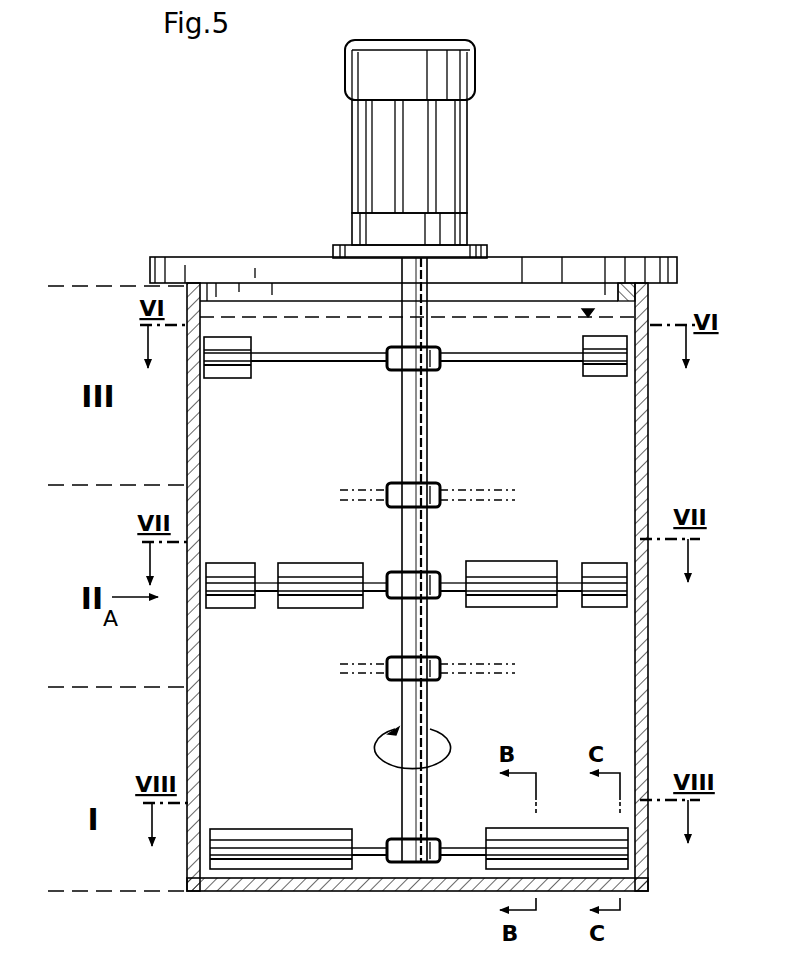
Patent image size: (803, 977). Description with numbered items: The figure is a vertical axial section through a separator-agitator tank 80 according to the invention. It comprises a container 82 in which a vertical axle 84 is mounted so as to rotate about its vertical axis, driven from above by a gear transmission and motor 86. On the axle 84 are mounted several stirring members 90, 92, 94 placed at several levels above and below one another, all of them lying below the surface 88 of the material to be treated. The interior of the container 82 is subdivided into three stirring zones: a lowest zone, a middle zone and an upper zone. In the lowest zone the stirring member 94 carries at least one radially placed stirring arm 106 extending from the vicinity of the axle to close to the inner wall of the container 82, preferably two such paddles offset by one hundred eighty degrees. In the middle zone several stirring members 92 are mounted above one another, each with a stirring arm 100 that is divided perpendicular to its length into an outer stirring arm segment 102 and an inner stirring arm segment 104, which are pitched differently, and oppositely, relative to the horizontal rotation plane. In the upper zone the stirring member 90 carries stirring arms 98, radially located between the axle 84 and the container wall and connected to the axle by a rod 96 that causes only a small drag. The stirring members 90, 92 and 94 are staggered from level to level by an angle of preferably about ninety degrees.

The separator-agitator tank 80 is at (568, 195).
The container 82 is at (650, 456).
The axle 84 is at (417, 333).
The motor 86 is at (465, 65).
The surface 88 is at (606, 331).
The stirring member 90 is at (440, 366).
The stirring member 92 is at (440, 492).
The stirring member 94 is at (437, 839).
The rod 96 is at (320, 363).
The stirring arm 98 is at (234, 378).
The stirring arm 100 is at (283, 550).
The outer stirring arm segment 102 is at (230, 606).
The inner stirring arm segment 104 is at (313, 603).
The stirring arm 106 is at (265, 838).